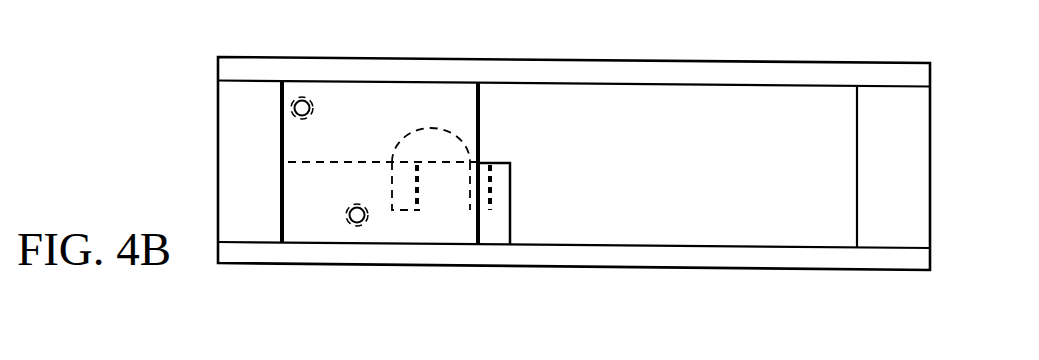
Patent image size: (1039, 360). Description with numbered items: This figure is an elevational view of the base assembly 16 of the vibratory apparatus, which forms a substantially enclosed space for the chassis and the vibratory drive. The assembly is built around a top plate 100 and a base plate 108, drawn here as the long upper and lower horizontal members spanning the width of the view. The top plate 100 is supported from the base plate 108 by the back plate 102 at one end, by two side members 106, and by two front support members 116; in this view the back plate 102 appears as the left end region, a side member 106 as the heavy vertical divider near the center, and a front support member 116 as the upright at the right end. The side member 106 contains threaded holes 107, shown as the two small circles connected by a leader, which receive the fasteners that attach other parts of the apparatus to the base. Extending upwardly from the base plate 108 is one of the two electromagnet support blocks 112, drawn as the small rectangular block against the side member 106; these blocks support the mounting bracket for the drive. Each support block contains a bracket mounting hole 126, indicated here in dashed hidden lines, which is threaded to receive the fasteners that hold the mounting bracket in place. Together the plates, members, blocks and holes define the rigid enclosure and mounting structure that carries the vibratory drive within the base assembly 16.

The base assembly 16 is at (207, 120).
The top plate 100 is at (606, 60).
The back plate 102 is at (222, 171).
The side member 106 is at (479, 140).
The threaded holes 107 is at (305, 116).
The base plate 108 is at (661, 246).
The electromagnet support block 112 is at (511, 203).
The front support member 116 is at (921, 163).
The bracket mounting hole 126 is at (383, 169).